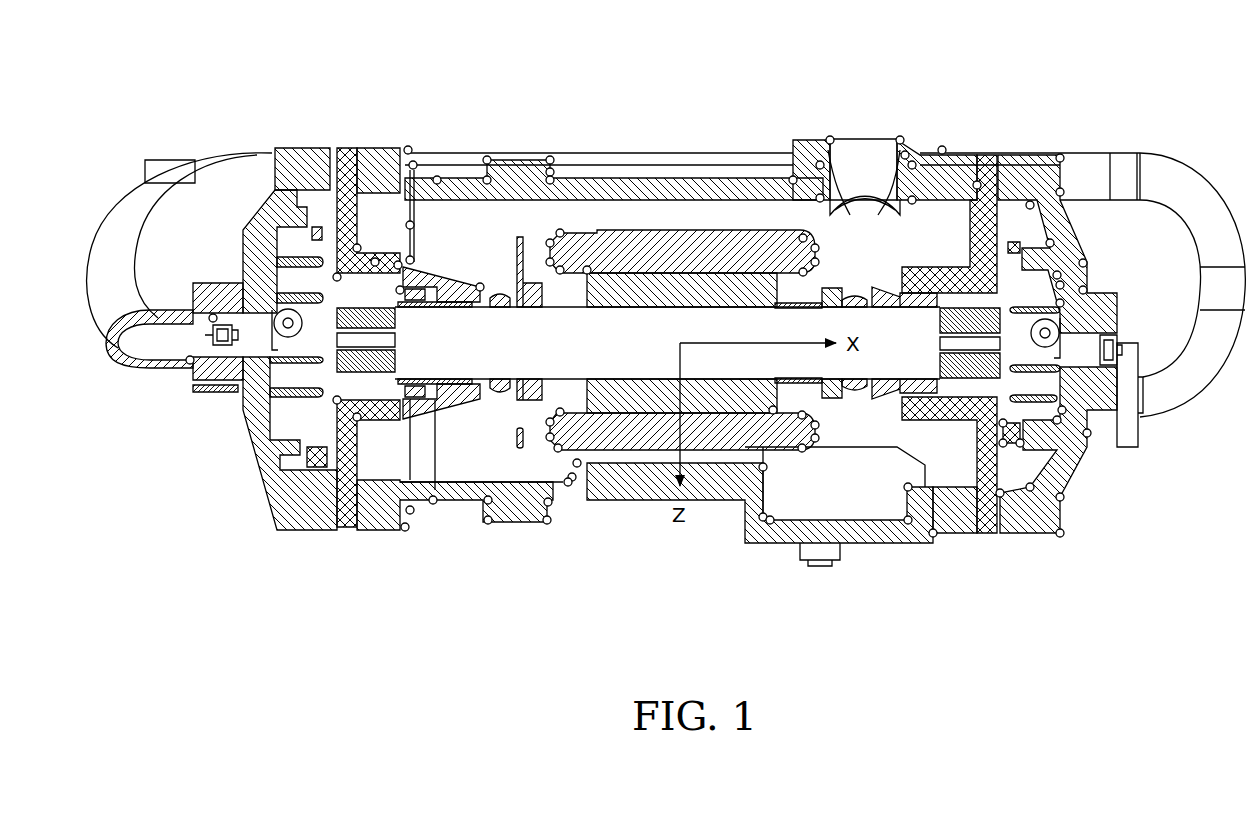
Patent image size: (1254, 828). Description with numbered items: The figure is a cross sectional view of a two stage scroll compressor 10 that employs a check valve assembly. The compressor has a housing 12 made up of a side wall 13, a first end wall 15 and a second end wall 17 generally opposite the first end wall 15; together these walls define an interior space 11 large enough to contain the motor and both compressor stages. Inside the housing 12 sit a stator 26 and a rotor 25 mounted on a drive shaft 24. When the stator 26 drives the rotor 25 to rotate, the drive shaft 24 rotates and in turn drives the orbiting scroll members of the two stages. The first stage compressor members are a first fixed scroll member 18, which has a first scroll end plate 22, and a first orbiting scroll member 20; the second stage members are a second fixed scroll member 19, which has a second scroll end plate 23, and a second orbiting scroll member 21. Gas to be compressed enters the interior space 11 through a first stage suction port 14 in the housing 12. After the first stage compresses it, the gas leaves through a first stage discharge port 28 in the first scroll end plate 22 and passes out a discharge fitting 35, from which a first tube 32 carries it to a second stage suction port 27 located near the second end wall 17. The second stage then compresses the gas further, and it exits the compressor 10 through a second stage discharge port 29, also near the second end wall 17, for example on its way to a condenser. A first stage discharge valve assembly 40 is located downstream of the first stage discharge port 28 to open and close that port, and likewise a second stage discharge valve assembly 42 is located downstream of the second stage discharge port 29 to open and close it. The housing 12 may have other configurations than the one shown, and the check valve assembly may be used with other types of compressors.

The two stage scroll compressor 10 is at (931, 131).
The interior space 11 is at (478, 462).
The housing 12 is at (677, 176).
The side wall 13 is at (622, 178).
The first stage suction port 14 is at (866, 136).
The first end wall 15 is at (243, 423).
The second end wall 17 is at (1067, 457).
The first fixed scroll member 18 is at (288, 150).
The second fixed scroll member 19 is at (1027, 150).
The first orbiting scroll member 20 is at (348, 150).
The second orbiting scroll member 21 is at (991, 150).
The first scroll end plate 22 is at (240, 270).
The second scroll end plate 23 is at (1068, 322).
The drive shaft 24 is at (560, 298).
The rotor 25 is at (585, 400).
The stator 26 is at (640, 455).
The second stage suction port 27 is at (1143, 397).
The first stage discharge port 28 is at (180, 305).
The second stage discharge port 29 is at (1063, 345).
The first tube 32 is at (118, 212).
The discharge fitting 35 is at (160, 238).
The first stage discharge valve assembly 40 is at (190, 383).
The second stage discharge valve assembly 42 is at (1117, 380).